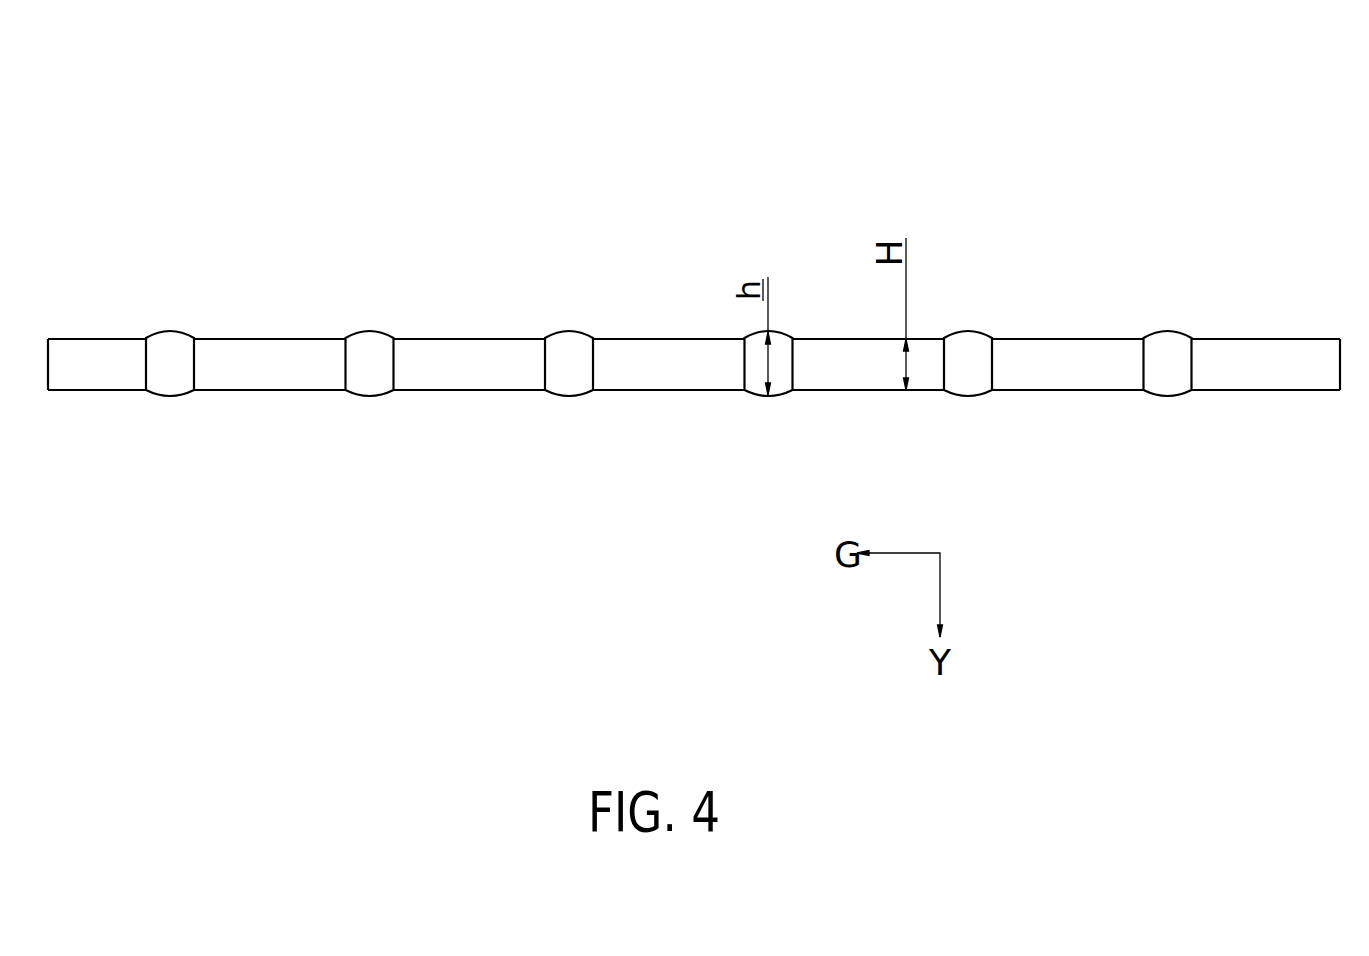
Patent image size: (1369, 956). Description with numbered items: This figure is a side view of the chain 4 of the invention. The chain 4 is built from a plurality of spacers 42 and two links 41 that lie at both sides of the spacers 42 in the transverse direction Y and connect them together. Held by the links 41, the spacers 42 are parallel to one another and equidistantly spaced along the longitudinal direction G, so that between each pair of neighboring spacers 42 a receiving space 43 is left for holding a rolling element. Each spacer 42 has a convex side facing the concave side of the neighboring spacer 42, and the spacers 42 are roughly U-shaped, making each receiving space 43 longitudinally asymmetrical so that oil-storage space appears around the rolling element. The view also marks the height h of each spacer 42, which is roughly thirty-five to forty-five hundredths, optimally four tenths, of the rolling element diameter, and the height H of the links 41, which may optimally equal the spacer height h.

The chain 4 is at (135, 95).
The link 41 is at (278, 339).
The spacer 42 is at (560, 396).
The receiving space 43 is at (672, 366).